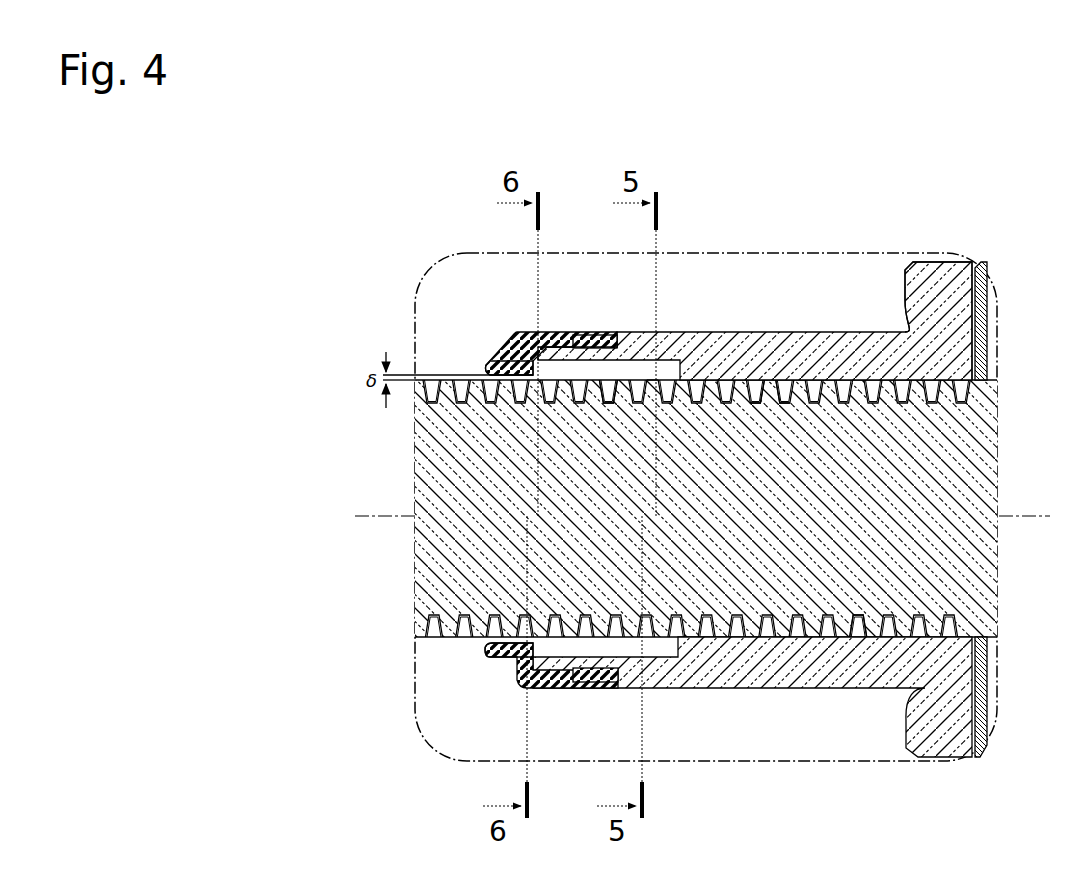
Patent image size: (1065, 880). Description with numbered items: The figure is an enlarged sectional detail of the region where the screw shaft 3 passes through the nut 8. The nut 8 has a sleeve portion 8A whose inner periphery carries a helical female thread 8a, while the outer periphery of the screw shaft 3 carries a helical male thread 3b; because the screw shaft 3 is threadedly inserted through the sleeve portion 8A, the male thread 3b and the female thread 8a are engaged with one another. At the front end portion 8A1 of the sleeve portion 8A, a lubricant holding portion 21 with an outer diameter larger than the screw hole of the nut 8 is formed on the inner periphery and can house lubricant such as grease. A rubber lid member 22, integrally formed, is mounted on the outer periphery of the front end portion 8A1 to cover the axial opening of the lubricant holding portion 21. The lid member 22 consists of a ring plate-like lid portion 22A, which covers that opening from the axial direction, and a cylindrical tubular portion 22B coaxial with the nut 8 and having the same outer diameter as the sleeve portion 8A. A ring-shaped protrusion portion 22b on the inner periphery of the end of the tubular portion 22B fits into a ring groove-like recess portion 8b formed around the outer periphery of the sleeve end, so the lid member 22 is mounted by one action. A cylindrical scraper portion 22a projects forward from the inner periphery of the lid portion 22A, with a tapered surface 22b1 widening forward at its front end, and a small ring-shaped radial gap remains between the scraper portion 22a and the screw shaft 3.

The screw shaft 3 is at (440, 558).
The male thread 3b is at (788, 380).
The nut 8 is at (826, 695).
The sleeve portion 8A is at (827, 331).
The one end portion (front end portion) of the sleeve portion 8A1 is at (576, 345).
The female thread 8a is at (870, 613).
The recess portion 8b is at (598, 348).
The lubricant holding portion 21 is at (655, 378).
The lid member 22 is at (573, 323).
The scraper portion 22a is at (497, 360).
The protrusion portion 22b is at (601, 405).
The lid portion 22A is at (516, 676).
The tubular portion 22B is at (568, 688).
The tapered surface 22b1 is at (490, 640).